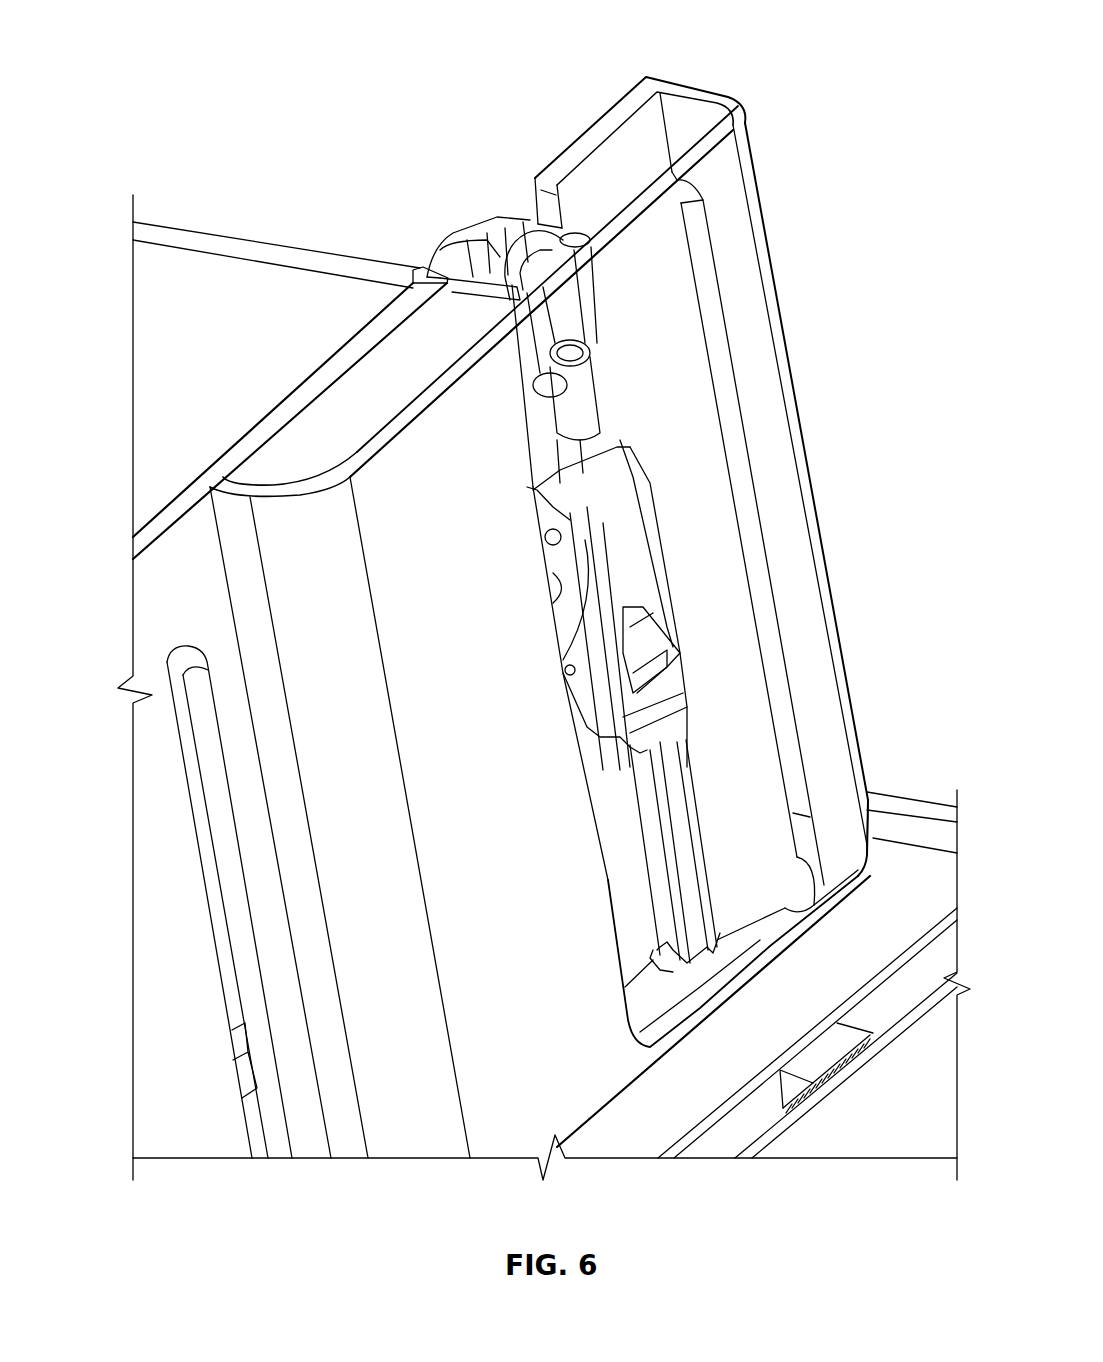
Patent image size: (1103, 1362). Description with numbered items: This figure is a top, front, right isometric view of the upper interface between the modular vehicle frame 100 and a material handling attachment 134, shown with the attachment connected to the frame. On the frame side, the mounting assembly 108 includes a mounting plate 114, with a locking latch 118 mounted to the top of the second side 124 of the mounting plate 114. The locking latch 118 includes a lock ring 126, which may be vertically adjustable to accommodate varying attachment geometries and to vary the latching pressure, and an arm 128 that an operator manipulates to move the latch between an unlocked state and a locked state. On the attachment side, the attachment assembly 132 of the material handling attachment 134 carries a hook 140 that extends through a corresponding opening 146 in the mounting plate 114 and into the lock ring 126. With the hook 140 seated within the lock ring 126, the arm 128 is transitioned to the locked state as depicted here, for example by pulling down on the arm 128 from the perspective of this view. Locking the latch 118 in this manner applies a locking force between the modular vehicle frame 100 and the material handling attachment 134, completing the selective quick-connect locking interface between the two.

The modular vehicle frame 100 is at (155, 48).
The mounting assembly 108 is at (823, 217).
The mounting plate 114 is at (714, 600).
The locking latch 118 is at (633, 537).
The second side 124 is at (645, 145).
The lock ring 126 is at (573, 311).
The arm 128 is at (673, 828).
The attachment assembly 132 is at (347, 156).
The material handling attachment 134 is at (262, 118).
The hook 140 is at (473, 250).
The opening 146 is at (552, 207).